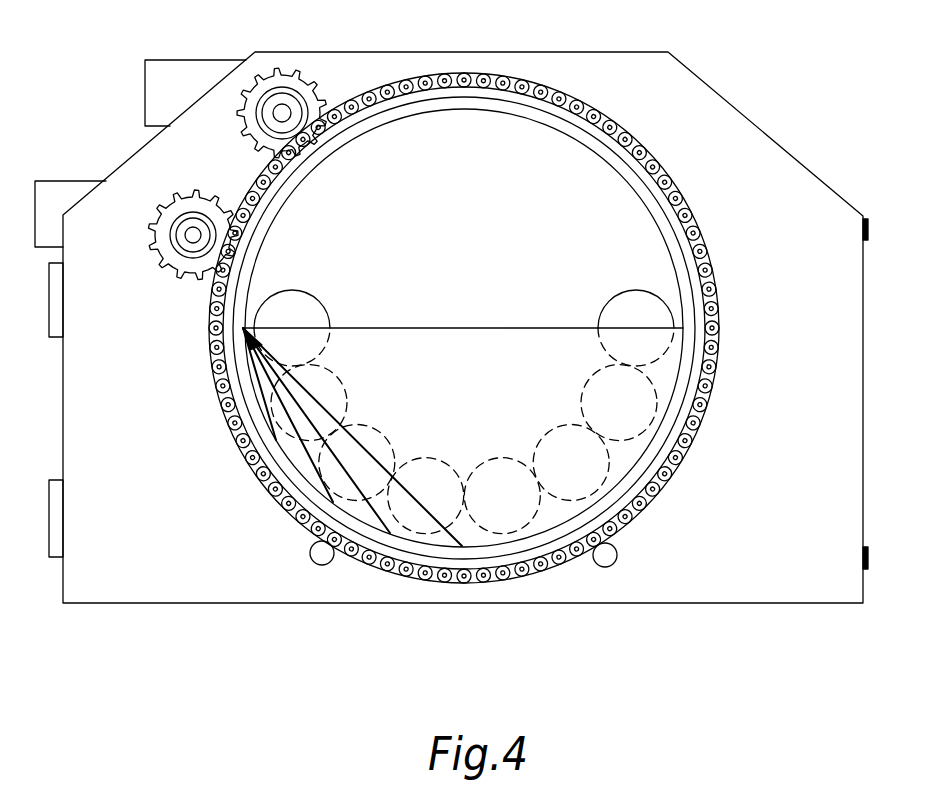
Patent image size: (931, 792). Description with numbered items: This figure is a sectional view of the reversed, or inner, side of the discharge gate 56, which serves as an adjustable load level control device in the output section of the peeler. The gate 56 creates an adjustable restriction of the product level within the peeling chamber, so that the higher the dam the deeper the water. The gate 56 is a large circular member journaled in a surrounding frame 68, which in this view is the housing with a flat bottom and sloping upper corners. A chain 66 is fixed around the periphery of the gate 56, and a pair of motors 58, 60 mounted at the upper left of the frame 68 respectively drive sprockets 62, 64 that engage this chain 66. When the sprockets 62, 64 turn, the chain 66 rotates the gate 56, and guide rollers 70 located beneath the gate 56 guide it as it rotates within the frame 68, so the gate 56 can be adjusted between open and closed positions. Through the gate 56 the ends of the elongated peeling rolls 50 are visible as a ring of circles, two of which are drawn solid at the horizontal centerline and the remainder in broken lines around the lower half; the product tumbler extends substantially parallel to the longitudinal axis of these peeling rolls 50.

The peeling rolls 50 is at (657, 307).
The discharge gate 56 is at (471, 400).
The motor 58 is at (73, 181).
The motor 60 is at (178, 58).
The sprocket 62 is at (163, 250).
The sprocket 64 is at (253, 128).
The chain 66 is at (617, 122).
The surrounding frame 68 is at (792, 232).
The guide rollers 70 is at (310, 563).